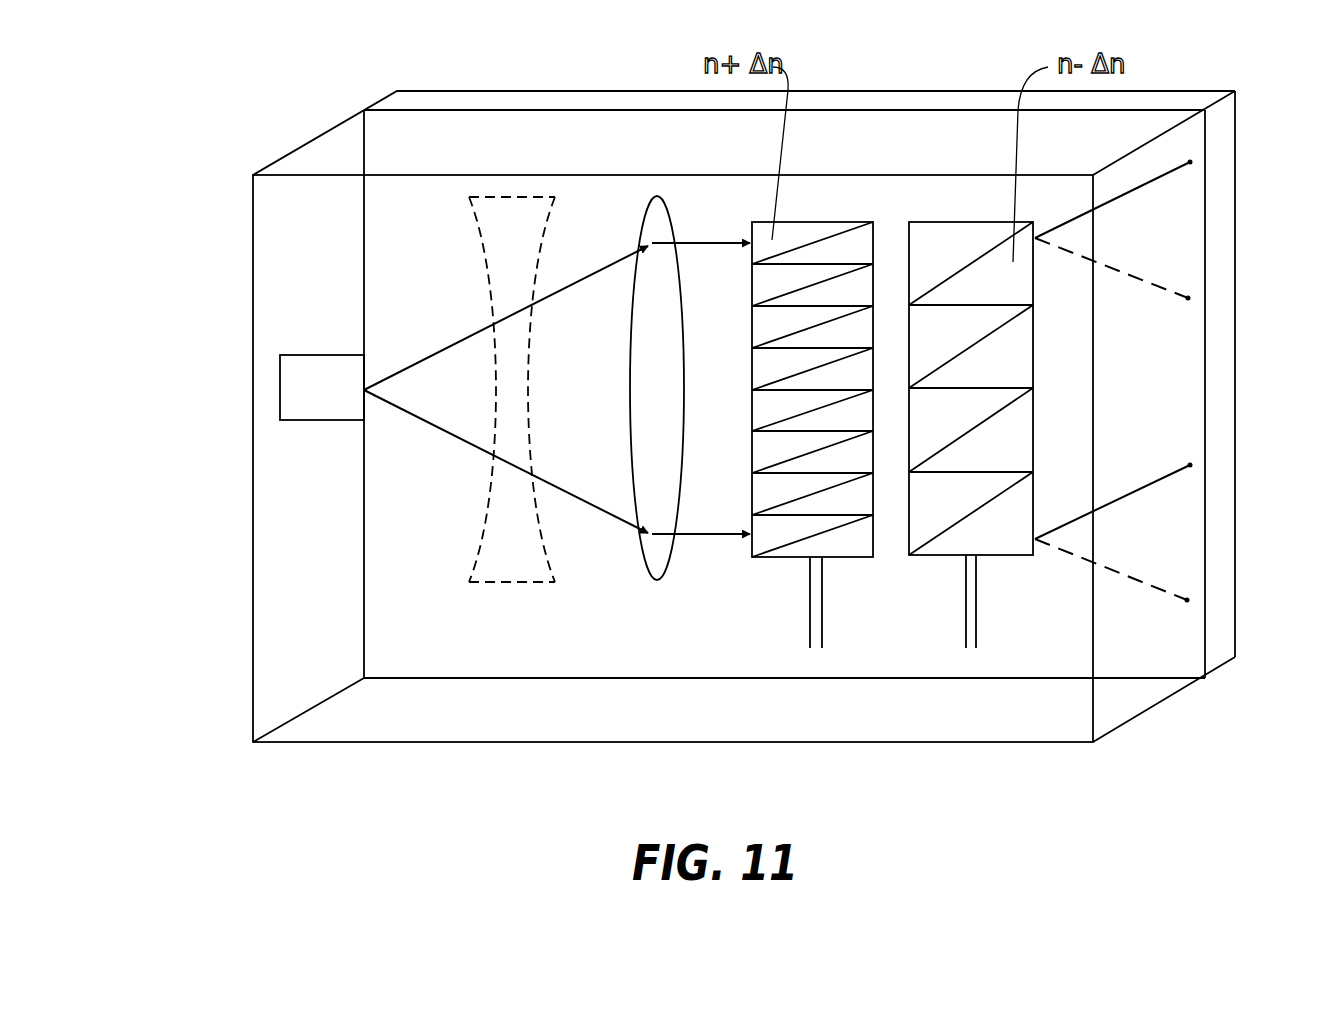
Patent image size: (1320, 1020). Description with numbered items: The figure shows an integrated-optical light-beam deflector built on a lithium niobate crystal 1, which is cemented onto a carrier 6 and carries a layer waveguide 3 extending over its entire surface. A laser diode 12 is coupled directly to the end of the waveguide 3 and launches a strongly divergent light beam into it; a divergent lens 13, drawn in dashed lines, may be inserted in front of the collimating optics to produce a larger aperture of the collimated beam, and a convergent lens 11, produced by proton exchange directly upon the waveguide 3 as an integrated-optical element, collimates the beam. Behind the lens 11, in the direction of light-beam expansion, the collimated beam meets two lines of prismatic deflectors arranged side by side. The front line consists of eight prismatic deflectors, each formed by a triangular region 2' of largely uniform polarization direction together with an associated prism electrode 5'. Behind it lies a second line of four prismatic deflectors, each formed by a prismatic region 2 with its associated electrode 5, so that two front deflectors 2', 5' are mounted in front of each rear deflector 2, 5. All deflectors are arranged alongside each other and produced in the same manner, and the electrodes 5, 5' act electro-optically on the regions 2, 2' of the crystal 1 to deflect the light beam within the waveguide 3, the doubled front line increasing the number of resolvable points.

The lithium niobate crystal 1 is at (1220, 403).
The region exhibiting uniform direction of polarization 2 is at (955, 506).
The prismatic region of second deflector line 2' is at (812, 507).
The layer waveguide 3 is at (1205, 330).
The prism electrode 5 is at (1028, 667).
The prism electrode of second deflector line 5' is at (833, 665).
The carrier 6 is at (288, 580).
The convergent lens 11 is at (658, 566).
The laser diode 12 is at (280, 393).
The concave lens 13 is at (502, 197).